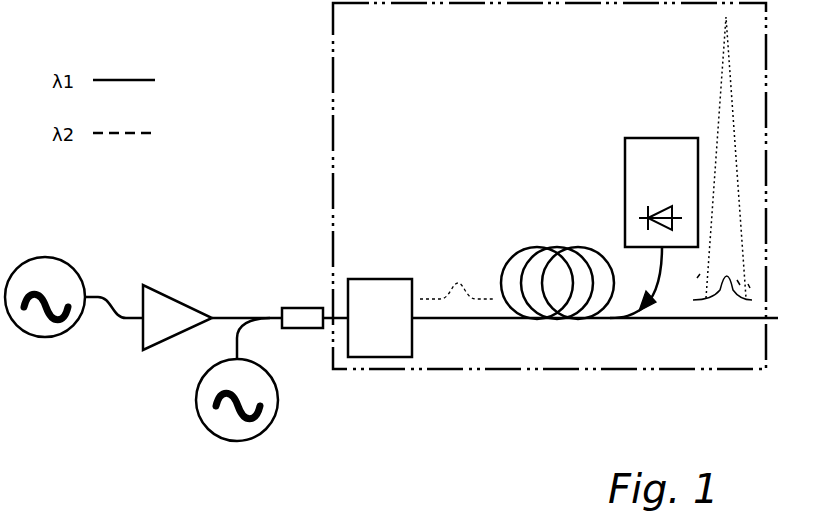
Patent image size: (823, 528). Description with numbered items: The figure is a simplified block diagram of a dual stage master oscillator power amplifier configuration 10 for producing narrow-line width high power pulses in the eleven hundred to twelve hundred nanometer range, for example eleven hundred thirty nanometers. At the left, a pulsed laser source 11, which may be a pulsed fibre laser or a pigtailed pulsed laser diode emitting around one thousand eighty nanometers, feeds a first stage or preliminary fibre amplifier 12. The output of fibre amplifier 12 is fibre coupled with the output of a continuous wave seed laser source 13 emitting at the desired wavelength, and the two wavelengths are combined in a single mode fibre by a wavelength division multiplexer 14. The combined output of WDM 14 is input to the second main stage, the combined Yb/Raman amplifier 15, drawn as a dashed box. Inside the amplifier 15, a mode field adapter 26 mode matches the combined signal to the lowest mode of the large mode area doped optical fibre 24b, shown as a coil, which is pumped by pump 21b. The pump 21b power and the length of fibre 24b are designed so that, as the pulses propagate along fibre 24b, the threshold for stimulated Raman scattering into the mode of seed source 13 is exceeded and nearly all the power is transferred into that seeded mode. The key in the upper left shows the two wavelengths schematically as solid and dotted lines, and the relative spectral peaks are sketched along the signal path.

The master oscillator power amplifier (MOPA) configuration 10 is at (320, 420).
The pulsed laser source 11 is at (74, 297).
The preliminary fibre amplifier 12 is at (177, 317).
The continuous wave (CW) seed laser source 13 is at (237, 379).
The wavelength division multiplexer (WDM) 14 is at (290, 308).
The combined Yb/Raman amplifier 15 is at (487, 370).
The pump 21b is at (654, 228).
The large mode area (LMA) doped optical fibre 24b is at (523, 250).
The mode field adapter (MFA) 26 is at (420, 318).